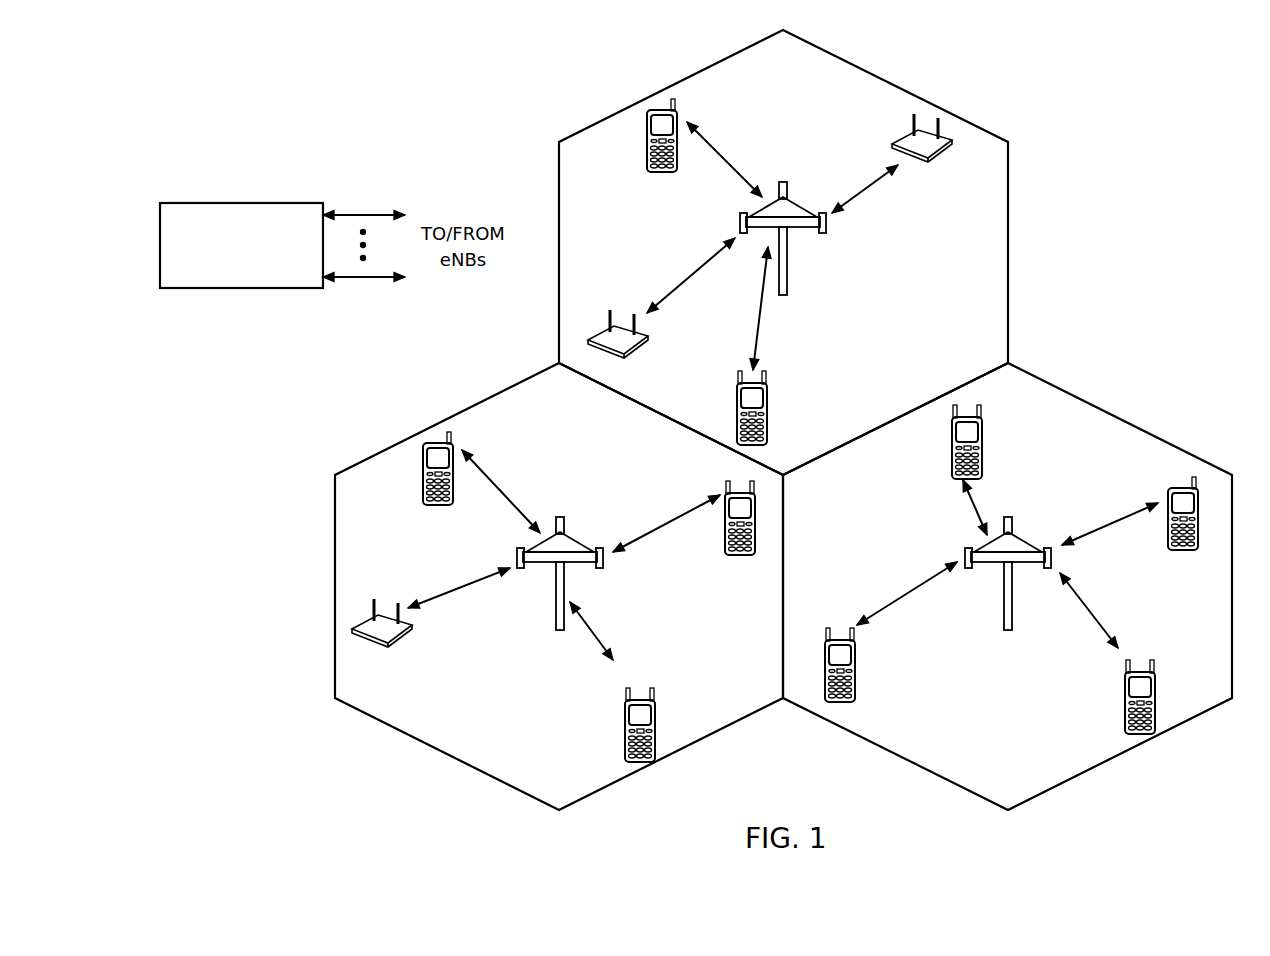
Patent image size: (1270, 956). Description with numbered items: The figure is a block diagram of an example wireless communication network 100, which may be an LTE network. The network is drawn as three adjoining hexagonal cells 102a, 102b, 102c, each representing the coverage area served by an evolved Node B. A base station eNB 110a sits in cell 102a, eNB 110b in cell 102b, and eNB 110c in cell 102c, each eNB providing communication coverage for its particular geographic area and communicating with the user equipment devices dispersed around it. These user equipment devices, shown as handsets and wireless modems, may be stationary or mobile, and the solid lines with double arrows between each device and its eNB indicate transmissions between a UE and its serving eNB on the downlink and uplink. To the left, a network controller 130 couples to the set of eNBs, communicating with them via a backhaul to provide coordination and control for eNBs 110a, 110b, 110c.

The wireless communication network 100 is at (1110, 116).
The cell 102a is at (875, 74).
The cell 102b is at (486, 400).
The cell 102c is at (1115, 417).
The evolved Node B (eNB) 110a is at (791, 197).
The evolved Node B (eNB) 110b is at (568, 532).
The evolved Node B (eNB) 110c is at (1020, 532).
The network controller 130 is at (258, 203).